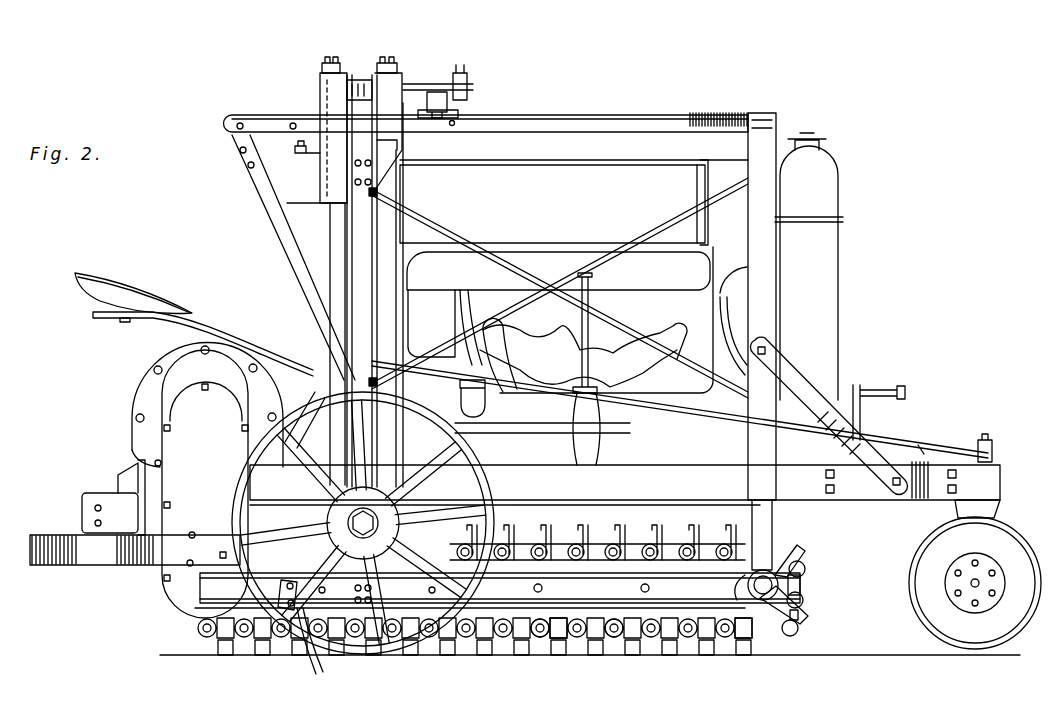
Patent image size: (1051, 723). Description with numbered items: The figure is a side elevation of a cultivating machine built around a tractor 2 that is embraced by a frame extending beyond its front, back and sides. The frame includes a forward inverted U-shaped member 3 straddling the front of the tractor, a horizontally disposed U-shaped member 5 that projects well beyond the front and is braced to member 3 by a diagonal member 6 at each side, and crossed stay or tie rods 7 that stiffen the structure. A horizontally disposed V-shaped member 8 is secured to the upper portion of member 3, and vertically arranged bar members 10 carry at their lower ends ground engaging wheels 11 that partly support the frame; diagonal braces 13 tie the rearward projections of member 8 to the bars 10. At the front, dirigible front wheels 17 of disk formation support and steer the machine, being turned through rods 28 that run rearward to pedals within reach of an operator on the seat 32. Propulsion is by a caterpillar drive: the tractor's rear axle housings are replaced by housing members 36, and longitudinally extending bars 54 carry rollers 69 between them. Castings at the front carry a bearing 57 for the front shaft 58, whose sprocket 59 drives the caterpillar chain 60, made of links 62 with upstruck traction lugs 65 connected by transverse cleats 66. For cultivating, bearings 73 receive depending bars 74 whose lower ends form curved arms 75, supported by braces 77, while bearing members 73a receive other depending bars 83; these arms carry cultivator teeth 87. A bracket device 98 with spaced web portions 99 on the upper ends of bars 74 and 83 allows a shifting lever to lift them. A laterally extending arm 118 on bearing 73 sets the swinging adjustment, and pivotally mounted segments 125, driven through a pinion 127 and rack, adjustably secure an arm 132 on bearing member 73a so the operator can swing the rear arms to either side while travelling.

The tractor 2 is at (574, 312).
The forward inverted U-shaped member 3 is at (775, 282).
The horizontally disposed U-shaped member 5 is at (625, 485).
The diagonal member 6 is at (830, 380).
The stay or tie rods 7 is at (760, 113).
The horizontally disposed V-shaped member 8 is at (644, 115).
The vertically arranged bar members 10 is at (344, 284).
The ground engaging wheels 11 is at (403, 643).
The braces 13 is at (313, 262).
The dirigible front wheels 17 is at (998, 488).
The rods 28 is at (916, 436).
The seat 32 is at (127, 290).
The housing members 36 is at (175, 407).
The longitudinally extending bars 54 is at (500, 588).
The bearing 57 is at (791, 597).
The front shaft 58 is at (805, 595).
The sprocket 59 is at (746, 620).
The caterpillar chain 60 is at (514, 645).
The links 62 is at (631, 635).
The traction lugs 65 is at (571, 651).
The transverse cleats 66 is at (680, 535).
The rollers 69 is at (542, 634).
The bearings 73 is at (321, 107).
The bearing members 73a is at (403, 146).
The depending bars 74 is at (300, 224).
The arms 75 is at (132, 567).
The braces 77 is at (317, 357).
The depending bars 83 is at (404, 186).
The cultivator teeth 87 is at (306, 676).
The bracket device 98 is at (345, 66).
The web portions 99 is at (370, 72).
The laterally extending arm 118 is at (294, 158).
The segments 125 is at (416, 110).
The pinion 127 is at (468, 80).
The arm 132 is at (434, 96).